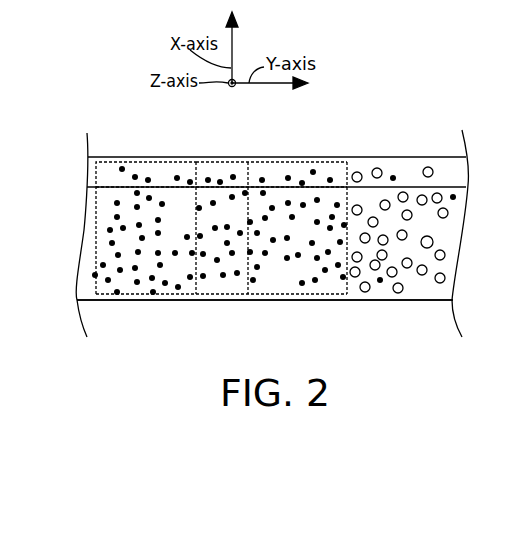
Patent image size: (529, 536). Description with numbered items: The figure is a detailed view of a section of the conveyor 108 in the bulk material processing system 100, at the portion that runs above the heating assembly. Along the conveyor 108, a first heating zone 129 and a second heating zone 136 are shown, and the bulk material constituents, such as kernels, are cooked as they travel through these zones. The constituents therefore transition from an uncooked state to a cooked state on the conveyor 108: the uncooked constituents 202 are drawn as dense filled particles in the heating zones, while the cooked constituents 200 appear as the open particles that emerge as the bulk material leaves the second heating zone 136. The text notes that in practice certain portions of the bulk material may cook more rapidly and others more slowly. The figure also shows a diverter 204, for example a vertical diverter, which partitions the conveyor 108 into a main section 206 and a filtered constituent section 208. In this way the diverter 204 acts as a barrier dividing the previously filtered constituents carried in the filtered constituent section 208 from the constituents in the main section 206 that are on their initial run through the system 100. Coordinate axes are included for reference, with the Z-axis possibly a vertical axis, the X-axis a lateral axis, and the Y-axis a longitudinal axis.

The bulk material processing system 100 is at (366, 140).
The first heating zone 129 is at (176, 161).
The filtered constituent section 208 is at (216, 158).
The second heating zone 136 is at (256, 161).
The diverter 204 is at (342, 188).
The main section 206 is at (240, 296).
The uncooked constituents 202 is at (165, 286).
The conveyor 108 is at (222, 301).
The cooked constituents 200 is at (421, 275).